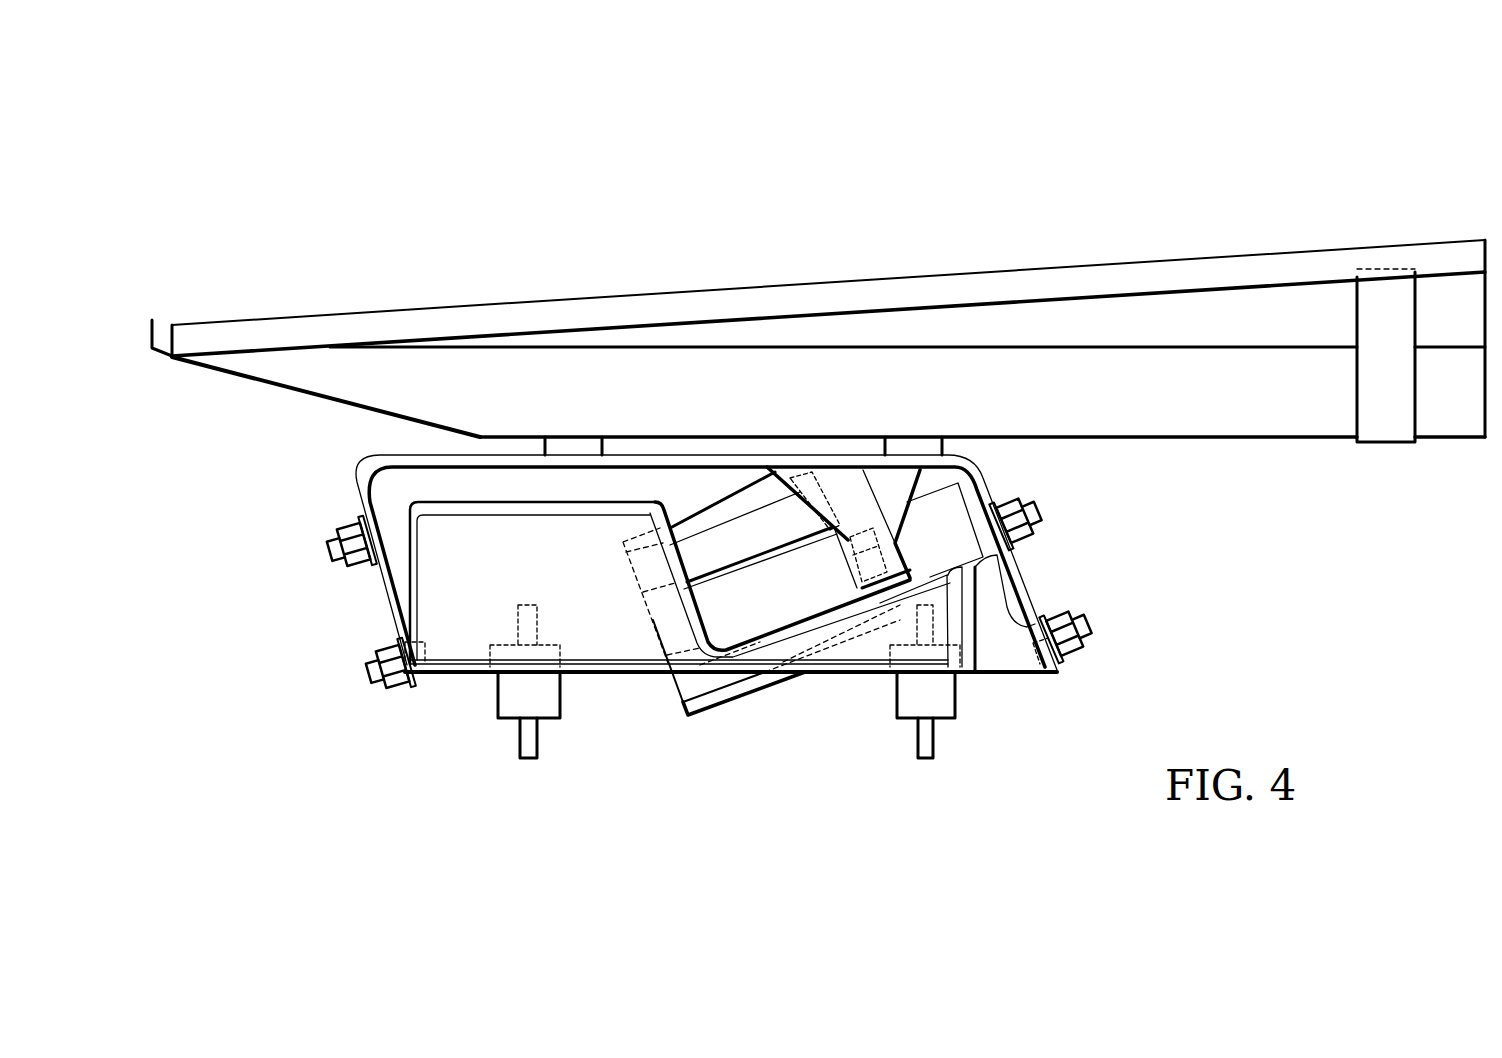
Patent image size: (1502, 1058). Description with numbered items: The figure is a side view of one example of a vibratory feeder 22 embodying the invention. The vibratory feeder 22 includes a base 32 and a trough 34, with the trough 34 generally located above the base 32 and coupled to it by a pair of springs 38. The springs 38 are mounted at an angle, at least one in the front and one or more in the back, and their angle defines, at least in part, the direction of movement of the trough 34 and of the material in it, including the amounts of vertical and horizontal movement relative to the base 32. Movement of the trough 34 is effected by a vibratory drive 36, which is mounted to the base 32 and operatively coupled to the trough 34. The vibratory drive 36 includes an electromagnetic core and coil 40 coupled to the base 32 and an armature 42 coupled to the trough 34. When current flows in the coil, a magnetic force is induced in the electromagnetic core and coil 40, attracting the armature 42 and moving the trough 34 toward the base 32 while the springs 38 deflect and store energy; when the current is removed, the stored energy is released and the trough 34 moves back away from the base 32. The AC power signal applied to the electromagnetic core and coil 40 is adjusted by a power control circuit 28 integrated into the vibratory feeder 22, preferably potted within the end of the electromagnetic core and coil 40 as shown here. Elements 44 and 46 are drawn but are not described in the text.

The vibratory feeder 22 is at (1232, 206).
The power control circuit 28 is at (668, 637).
The base 32 is at (610, 677).
The trough 34 is at (1245, 420).
The vibratory drive 36 is at (753, 557).
The springs 38 is at (380, 594).
The electromagnetic core and coil 40 is at (822, 589).
The armature 42 is at (845, 470).
The plate 44 is at (953, 507).
The mounting studs 46 is at (508, 710).